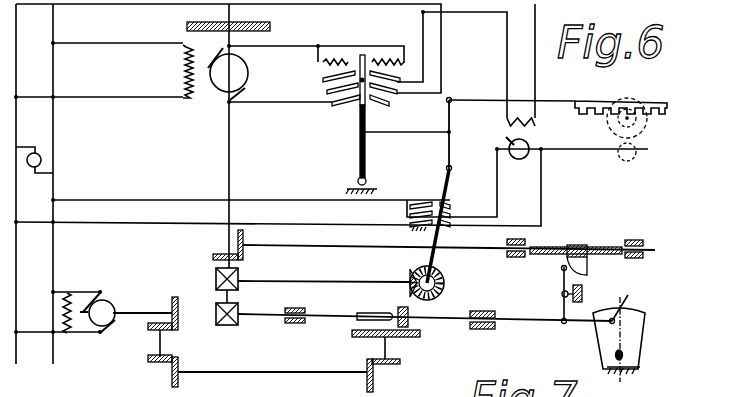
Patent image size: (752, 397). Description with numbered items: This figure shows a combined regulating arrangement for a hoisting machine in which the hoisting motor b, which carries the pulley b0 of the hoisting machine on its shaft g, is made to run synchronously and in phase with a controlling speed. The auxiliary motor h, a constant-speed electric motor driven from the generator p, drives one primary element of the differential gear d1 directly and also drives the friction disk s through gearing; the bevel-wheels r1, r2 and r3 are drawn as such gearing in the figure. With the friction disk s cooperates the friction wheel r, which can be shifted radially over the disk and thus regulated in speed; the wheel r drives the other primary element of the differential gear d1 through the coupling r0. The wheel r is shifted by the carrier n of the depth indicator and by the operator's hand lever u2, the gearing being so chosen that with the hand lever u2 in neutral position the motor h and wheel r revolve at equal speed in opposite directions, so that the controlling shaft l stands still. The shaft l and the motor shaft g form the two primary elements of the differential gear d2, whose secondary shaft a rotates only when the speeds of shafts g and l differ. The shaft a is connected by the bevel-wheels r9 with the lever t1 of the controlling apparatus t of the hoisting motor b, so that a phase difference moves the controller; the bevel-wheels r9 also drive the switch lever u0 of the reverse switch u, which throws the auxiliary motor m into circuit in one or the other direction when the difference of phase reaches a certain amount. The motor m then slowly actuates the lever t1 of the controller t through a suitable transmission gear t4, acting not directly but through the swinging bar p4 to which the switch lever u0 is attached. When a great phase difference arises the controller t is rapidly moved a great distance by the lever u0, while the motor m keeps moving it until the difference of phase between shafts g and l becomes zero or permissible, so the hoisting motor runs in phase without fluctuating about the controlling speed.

The pulley b0 is at (268, 27).
The hoisting motor b is at (221, 89).
The shaft of the hoisting motor g is at (225, 175).
The generator p is at (42, 160).
The controlling apparatus t is at (353, 116).
The lever of the controller t1 is at (356, 161).
The reverse switch u is at (428, 194).
The swinging bar p4 is at (453, 154).
The auxiliary motor m is at (523, 153).
The transmission gear t4 is at (561, 129).
The bevel gear r3 is at (243, 252).
The secondary shaft a is at (318, 280).
The carrier n is at (588, 272).
The bevel-wheels r9 is at (412, 271).
The switch lever u0 is at (438, 260).
The differential gear d2 is at (216, 279).
The differential gear d1 is at (222, 326).
The controlling shaft l is at (240, 297).
The coupling r0 is at (356, 309).
The friction wheel r is at (398, 310).
The friction disk s is at (400, 337).
The bevel gear r1 is at (382, 378).
The bevel gear r2 is at (148, 342).
The auxiliary motor h is at (100, 320).
The hand lever u2 is at (630, 328).